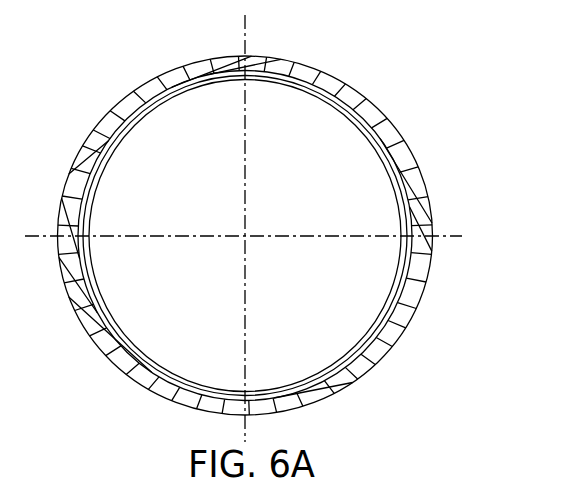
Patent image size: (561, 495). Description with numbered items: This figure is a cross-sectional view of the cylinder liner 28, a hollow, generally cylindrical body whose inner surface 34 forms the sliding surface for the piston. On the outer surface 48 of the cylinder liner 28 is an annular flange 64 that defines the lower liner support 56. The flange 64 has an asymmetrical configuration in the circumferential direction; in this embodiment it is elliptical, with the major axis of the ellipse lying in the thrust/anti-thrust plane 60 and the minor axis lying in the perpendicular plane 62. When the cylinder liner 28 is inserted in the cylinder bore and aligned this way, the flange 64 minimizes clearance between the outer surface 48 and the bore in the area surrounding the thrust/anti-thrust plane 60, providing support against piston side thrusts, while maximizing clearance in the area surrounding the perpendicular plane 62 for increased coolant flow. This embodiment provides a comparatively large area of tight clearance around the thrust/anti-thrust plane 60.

The cylinder liner 28 is at (380, 88).
The inner surface 34 is at (151, 362).
The outer surface 48 is at (147, 94).
The lower liner support 56 is at (378, 371).
The thrust/anti-thrust plane 60 is at (311, 233).
The perpendicular plane 62 is at (248, 135).
The annular flange 64 is at (416, 192).